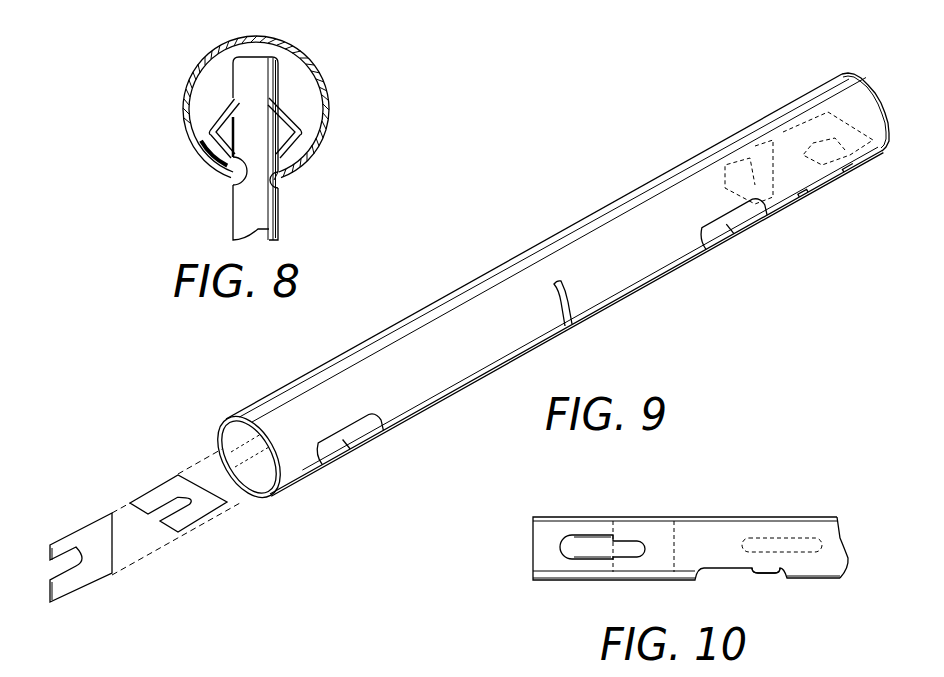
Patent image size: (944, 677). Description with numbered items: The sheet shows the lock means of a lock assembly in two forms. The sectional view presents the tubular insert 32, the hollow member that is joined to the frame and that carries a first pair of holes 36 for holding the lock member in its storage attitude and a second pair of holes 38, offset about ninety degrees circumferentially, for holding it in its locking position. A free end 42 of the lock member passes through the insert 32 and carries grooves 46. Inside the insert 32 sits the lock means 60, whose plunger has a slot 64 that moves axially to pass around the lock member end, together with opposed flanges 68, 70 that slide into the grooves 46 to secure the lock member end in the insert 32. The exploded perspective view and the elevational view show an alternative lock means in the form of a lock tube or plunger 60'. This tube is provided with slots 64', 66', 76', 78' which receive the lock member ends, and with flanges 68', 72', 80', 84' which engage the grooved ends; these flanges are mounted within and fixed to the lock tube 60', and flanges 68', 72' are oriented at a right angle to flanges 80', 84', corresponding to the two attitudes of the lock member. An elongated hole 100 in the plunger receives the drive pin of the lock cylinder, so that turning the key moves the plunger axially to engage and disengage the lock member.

In FIG. 8, the tubular insert 32 is at (210, 44).
In FIG. 8, the first pair of holes 36 is at (279, 185).
In FIG. 8, the second pair of holes 38 is at (324, 126).
In FIG. 8, the first free end of lock member 42 is at (284, 65).
In FIG. 8, the grooves 46 is at (287, 106).
In FIG. 8, the lock means 60 is at (342, 110).
In FIG. 8, the slot 64 is at (220, 179).
In FIG. 8, the flange 68 is at (193, 128).
In FIG. 8, the flange 70 is at (300, 113).
In FIG. 9, the lock tube or plunger 60' is at (500, 324).
In FIG. 10, the lock tube or plunger 60' is at (694, 526).
In FIG. 9, the slot 64' is at (451, 419).
In FIG. 10, the slot 64' is at (776, 591).
In FIG. 9, the slot 66' is at (825, 193).
In FIG. 9, the flange 68' is at (195, 511).
In FIG. 10, the flange 68' is at (814, 533).
In FIG. 9, the flange 72' is at (874, 77).
In FIG. 9, the slot 76' is at (366, 443).
In FIG. 10, the slot 76' is at (602, 526).
In FIG. 9, the slot 78' is at (740, 233).
In FIG. 9, the flange 80' is at (109, 557).
In FIG. 10, the flange 80' is at (643, 531).
In FIG. 9, the flange 84' is at (794, 154).
In FIG. 9, the elongated hole 100 is at (573, 303).